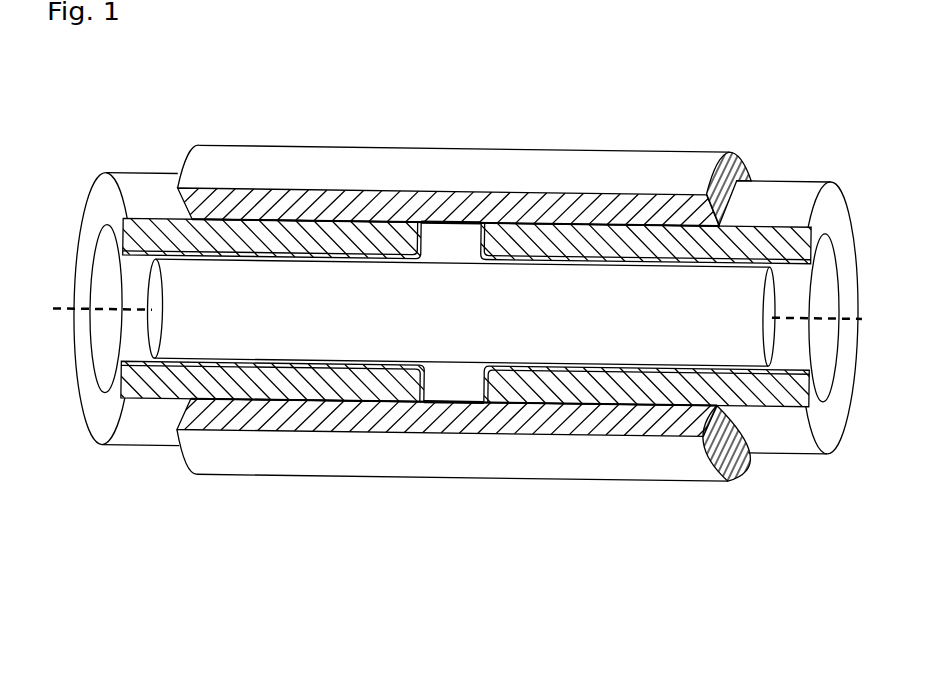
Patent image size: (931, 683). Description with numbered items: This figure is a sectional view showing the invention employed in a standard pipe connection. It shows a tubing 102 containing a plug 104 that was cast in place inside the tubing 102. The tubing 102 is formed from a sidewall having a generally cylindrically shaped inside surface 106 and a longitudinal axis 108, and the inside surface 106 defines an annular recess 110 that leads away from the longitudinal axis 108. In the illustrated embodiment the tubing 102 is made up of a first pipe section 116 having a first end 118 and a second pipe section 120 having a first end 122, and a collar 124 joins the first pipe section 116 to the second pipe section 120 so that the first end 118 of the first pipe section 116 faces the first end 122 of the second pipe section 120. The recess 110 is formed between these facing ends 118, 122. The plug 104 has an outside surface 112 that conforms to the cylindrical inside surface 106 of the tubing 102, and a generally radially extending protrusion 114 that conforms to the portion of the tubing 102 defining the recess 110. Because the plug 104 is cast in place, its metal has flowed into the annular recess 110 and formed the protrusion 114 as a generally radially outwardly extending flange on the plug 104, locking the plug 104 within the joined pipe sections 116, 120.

The tubing 102 is at (442, 144).
The plug 104 is at (605, 308).
The inside surface 106 is at (826, 225).
The longitudinal axis 108 is at (67, 309).
The recess 110 is at (436, 358).
The outside surface 112 is at (533, 361).
The radially extending protrusion 114 is at (462, 361).
The first pipe section 116 is at (719, 399).
The first end of first pipe section 118 is at (483, 218).
The second pipe section 120 is at (180, 387).
The first end of second pipe section 122 is at (392, 218).
The collar 124 is at (329, 157).